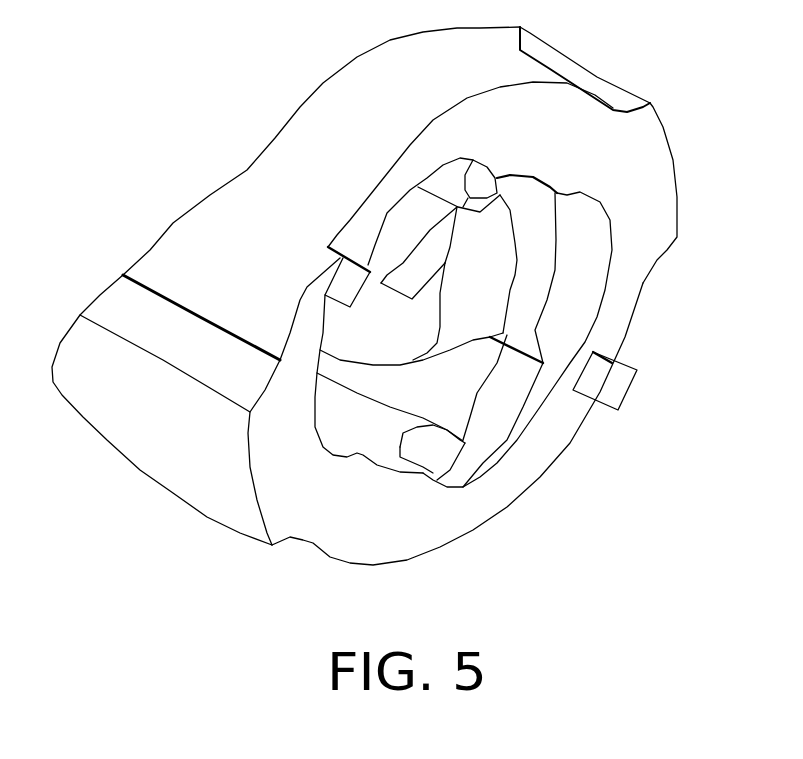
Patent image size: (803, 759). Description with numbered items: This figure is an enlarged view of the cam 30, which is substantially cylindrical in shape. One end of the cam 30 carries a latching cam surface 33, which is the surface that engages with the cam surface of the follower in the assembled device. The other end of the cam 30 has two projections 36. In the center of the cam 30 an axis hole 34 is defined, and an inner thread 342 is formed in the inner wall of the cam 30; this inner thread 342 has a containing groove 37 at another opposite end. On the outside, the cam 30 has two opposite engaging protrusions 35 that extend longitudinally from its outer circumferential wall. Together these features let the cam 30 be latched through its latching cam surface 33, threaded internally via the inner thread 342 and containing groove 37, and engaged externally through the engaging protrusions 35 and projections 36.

The cam 30 is at (393, 311).
The latching cam surface 33 is at (173, 223).
The axis hole 34 is at (392, 317).
The inner thread 342 is at (453, 410).
The engaging protrusions 35 is at (173, 440).
The projections 36 is at (617, 390).
The containing groove 37 is at (528, 248).